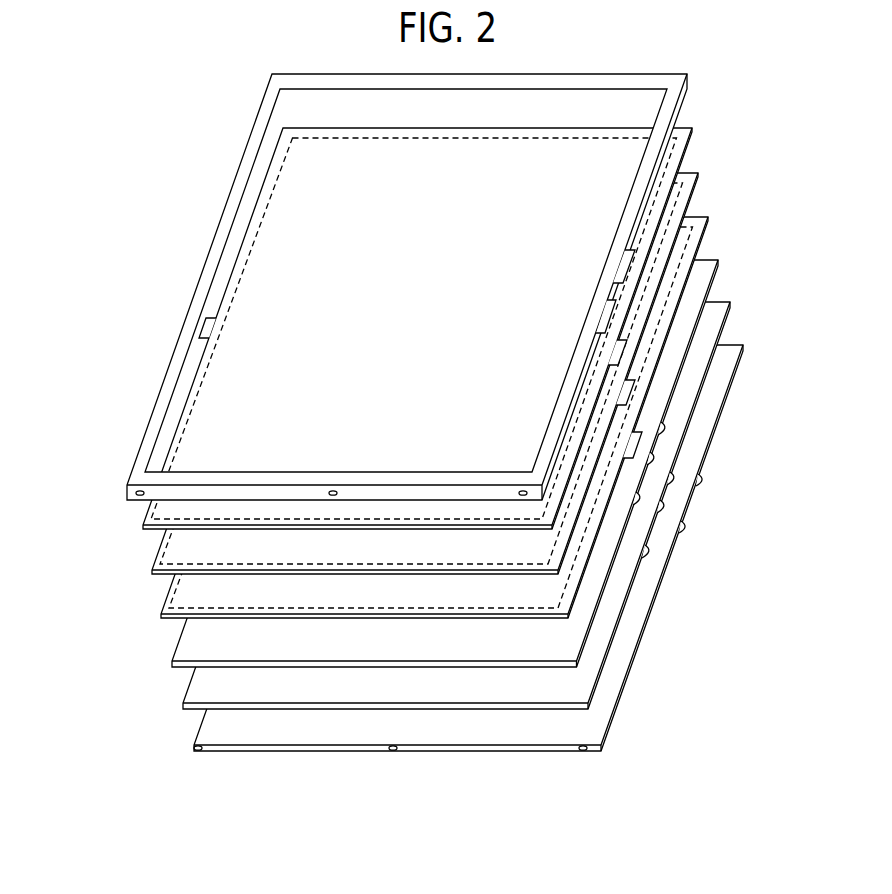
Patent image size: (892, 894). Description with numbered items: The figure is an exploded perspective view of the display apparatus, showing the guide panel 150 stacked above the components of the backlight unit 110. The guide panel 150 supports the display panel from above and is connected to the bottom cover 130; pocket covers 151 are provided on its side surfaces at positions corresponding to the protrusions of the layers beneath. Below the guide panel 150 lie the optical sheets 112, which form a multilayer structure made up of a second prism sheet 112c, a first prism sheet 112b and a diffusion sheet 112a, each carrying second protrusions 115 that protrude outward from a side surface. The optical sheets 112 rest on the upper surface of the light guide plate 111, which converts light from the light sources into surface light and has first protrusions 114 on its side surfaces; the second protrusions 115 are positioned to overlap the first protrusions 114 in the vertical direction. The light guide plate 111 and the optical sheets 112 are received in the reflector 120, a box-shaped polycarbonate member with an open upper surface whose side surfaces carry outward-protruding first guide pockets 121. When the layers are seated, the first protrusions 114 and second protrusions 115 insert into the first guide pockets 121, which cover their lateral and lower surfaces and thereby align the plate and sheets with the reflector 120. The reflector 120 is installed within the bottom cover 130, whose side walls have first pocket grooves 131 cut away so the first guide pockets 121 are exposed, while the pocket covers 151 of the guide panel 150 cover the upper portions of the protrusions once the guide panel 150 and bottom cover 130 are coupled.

The backlight unit 110 is at (172, 121).
The guide panel 150 is at (136, 461).
The pocket covers 151 is at (630, 252).
The optical sheets 112 is at (360, 376).
The diffusion sheet 112a is at (161, 616).
The first prism sheet 112b is at (152, 572).
The second prism sheet 112c is at (378, 331).
The second protrusions 115 is at (631, 445).
The light guide plate 111 is at (172, 664).
The first protrusions 114 is at (666, 428).
The reflector 120 is at (183, 706).
The first guide pockets 121 is at (676, 478).
The bottom cover 130 is at (194, 748).
The first pocket grooves 131 is at (683, 527).